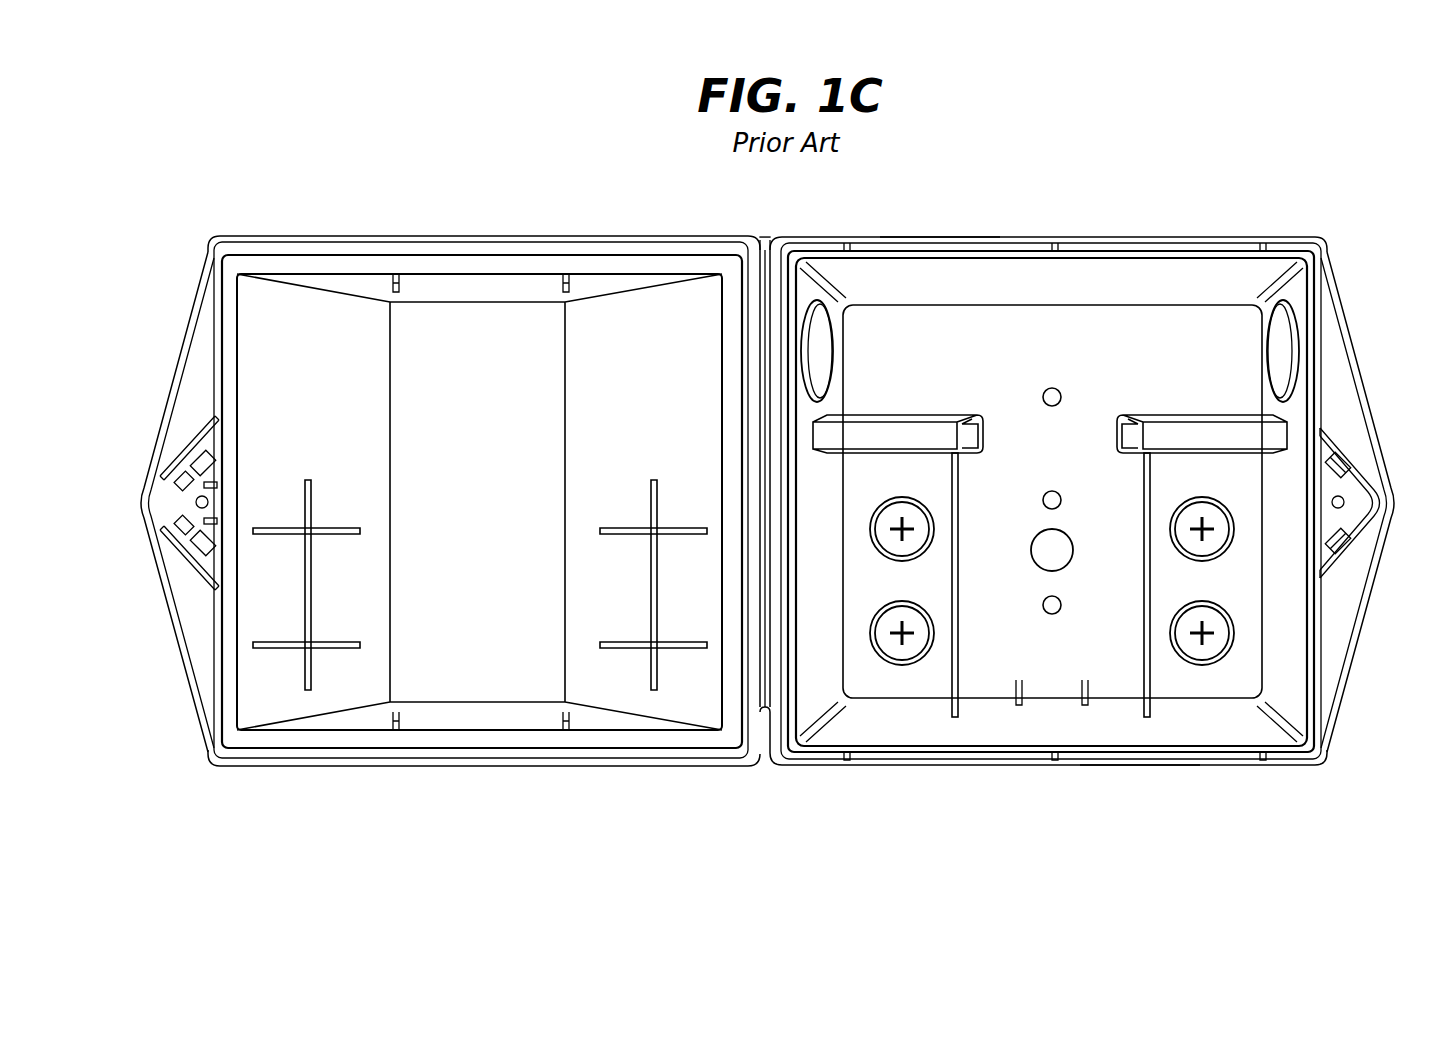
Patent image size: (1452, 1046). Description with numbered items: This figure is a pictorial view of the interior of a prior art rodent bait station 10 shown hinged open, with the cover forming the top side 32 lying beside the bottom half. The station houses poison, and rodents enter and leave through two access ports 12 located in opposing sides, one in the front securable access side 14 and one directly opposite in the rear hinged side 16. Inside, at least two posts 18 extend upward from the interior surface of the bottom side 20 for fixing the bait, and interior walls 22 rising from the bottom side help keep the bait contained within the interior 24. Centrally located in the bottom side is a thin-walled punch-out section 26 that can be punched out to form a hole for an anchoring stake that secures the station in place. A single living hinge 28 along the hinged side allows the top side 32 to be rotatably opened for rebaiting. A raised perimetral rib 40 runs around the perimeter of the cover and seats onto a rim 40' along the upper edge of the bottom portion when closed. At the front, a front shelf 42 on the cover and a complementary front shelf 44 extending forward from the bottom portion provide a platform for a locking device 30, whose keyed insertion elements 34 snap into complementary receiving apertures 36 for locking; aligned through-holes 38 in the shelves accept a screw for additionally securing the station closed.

The bait station 10 is at (1210, 152).
The access port 12 is at (815, 325).
The securable access side 14 is at (1315, 765).
The hinged side 16 is at (767, 246).
The posts 18 is at (898, 642).
The bottom side 20 is at (1166, 335).
The interior walls 22 is at (1141, 660).
The interior 24 is at (1021, 340).
The thin-walled punch-out section 26 is at (1058, 543).
The living hinge 28 is at (765, 672).
The locking device 30 is at (178, 506).
The top side / cover 32 is at (262, 295).
The keyed insertion elements 34 is at (186, 470).
The complementary receiving apertures 36 is at (1344, 456).
The aligned through-holes 38 is at (197, 501).
The raised perimetral rib 40 is at (484, 495).
The rim 40' is at (1042, 518).
The front shelf 42 is at (205, 298).
The complementary front shelf 44 is at (1341, 377).